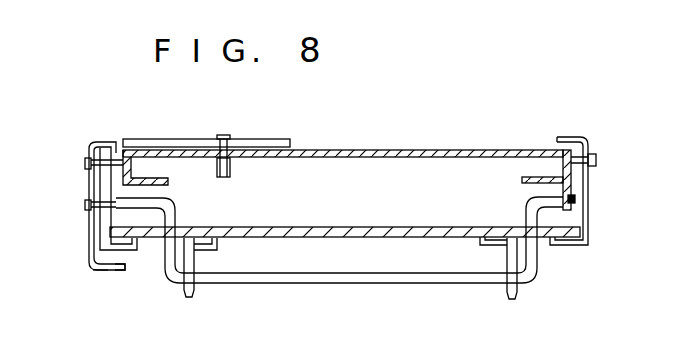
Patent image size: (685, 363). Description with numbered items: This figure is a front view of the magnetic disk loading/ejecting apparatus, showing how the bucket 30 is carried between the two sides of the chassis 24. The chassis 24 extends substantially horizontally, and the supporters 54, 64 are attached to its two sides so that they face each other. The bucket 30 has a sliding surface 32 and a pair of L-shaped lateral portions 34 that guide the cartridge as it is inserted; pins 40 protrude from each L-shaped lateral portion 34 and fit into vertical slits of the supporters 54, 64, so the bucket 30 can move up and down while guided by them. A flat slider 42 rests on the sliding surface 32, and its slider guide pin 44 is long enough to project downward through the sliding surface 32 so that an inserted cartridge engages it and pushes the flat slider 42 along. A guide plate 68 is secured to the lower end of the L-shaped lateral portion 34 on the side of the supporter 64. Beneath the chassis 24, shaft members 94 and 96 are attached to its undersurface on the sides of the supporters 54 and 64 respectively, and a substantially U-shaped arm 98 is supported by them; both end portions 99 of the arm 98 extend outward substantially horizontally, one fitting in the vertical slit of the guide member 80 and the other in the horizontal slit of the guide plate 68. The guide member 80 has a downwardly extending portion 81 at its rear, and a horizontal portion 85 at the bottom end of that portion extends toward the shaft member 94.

The bucket 30 is at (482, 124).
The chassis 24 is at (380, 227).
The sliding surface 32 is at (407, 150).
The L-shaped lateral portion 34 is at (560, 158).
The pin 40 is at (85, 163).
The flat slider 42 is at (172, 140).
The slider guide pin 44 is at (223, 179).
The supporter 54 is at (100, 185).
The supporter 64 is at (588, 216).
The guide plate 68 is at (571, 185).
The guide member 80 is at (97, 253).
The downwardly extending portion 81 is at (97, 272).
The horizontal portion 85 is at (128, 272).
The shaft member 94 is at (188, 292).
The shaft member 96 is at (511, 290).
The substantially U-shaped arm 98 is at (338, 277).
The end portion 99 is at (85, 205).